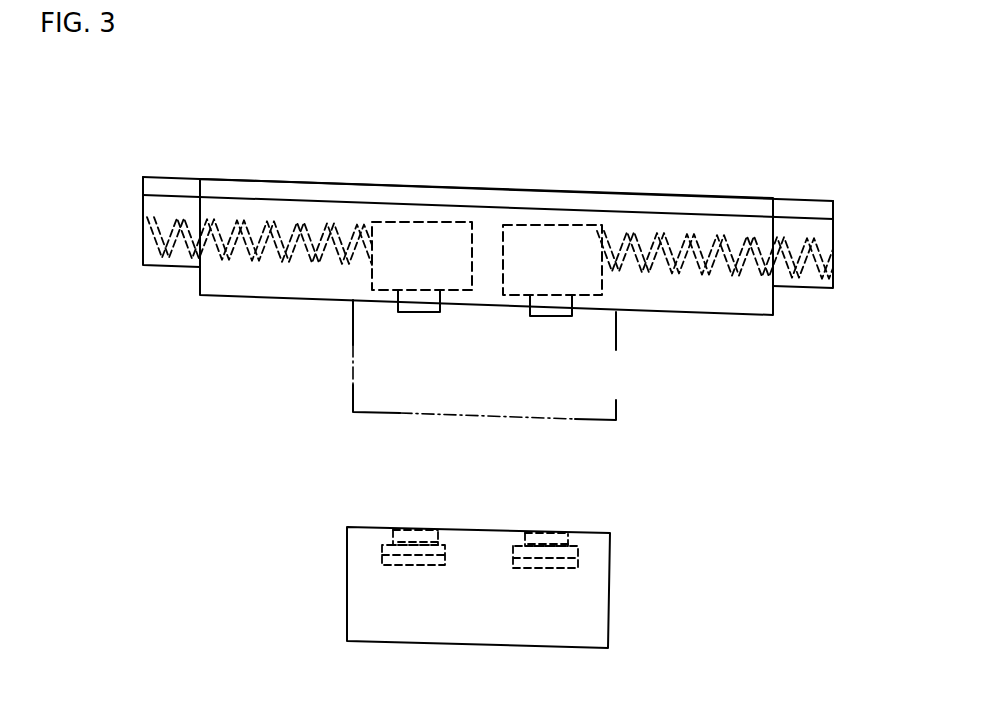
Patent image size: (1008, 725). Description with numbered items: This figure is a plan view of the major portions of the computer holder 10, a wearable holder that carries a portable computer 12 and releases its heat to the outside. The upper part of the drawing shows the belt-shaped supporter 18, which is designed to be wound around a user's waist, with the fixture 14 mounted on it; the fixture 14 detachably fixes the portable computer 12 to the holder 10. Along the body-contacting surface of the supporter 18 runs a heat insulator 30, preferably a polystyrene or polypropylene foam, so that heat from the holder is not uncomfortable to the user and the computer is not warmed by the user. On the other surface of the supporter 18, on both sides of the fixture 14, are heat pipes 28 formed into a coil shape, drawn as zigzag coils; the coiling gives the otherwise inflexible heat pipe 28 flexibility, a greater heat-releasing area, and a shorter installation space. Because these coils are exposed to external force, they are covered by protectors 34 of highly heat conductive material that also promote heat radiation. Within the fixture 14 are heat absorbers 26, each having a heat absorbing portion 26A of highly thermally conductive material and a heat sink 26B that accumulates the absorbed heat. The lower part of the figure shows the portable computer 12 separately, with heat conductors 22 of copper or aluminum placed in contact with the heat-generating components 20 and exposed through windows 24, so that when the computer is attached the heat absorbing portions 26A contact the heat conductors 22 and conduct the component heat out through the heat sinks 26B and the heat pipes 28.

The computer holder 10 is at (672, 102).
The portable computer 12 is at (624, 408).
The fixture 14 is at (673, 297).
The supporter 18 is at (169, 172).
The heat-generating component 20 is at (382, 563).
The heat conductor 22 is at (380, 543).
The window 24 is at (427, 529).
The heat absorber 26 is at (392, 303).
The heat absorbing portion 26A is at (425, 311).
The heat sink 26B is at (437, 232).
The heat pipe 28 is at (248, 222).
The heat insulator 30 is at (817, 207).
The protector 34 is at (172, 266).